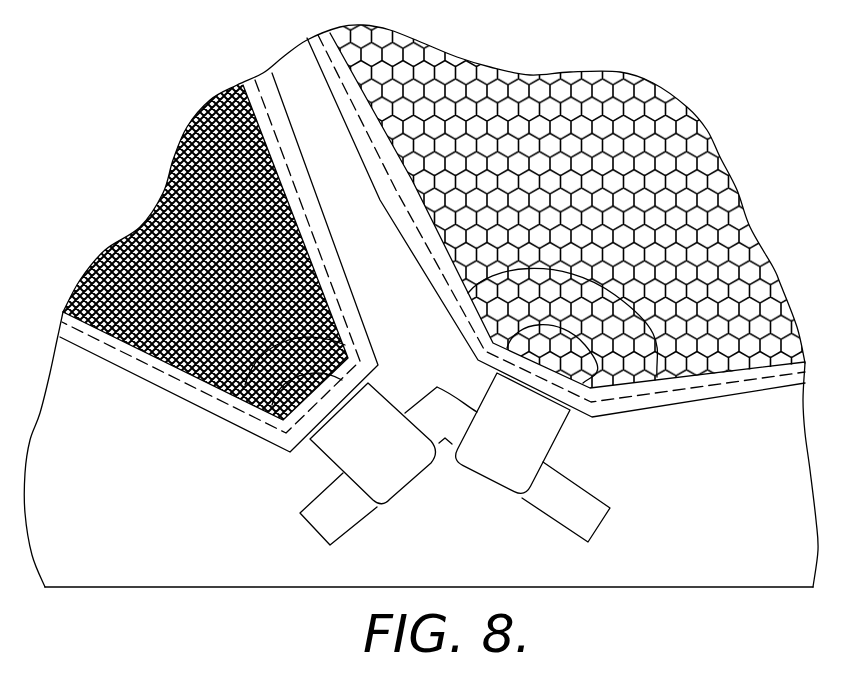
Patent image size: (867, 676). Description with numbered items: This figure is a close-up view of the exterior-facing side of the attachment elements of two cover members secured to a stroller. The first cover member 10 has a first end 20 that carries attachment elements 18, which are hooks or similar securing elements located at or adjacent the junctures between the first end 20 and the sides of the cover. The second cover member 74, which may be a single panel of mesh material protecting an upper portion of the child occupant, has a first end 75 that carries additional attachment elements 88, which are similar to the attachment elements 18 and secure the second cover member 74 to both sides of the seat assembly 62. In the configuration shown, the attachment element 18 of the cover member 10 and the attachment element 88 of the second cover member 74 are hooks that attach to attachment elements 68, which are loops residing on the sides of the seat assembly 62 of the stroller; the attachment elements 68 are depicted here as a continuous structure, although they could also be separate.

The cover member 10 is at (712, 407).
The attachment element 18 is at (488, 493).
The first end 20 is at (452, 322).
The seat assembly 62 is at (805, 498).
The attachment element 68 is at (316, 534).
The second cover member 74 is at (168, 413).
The first end 75 is at (370, 337).
The attachment element 88 is at (414, 493).